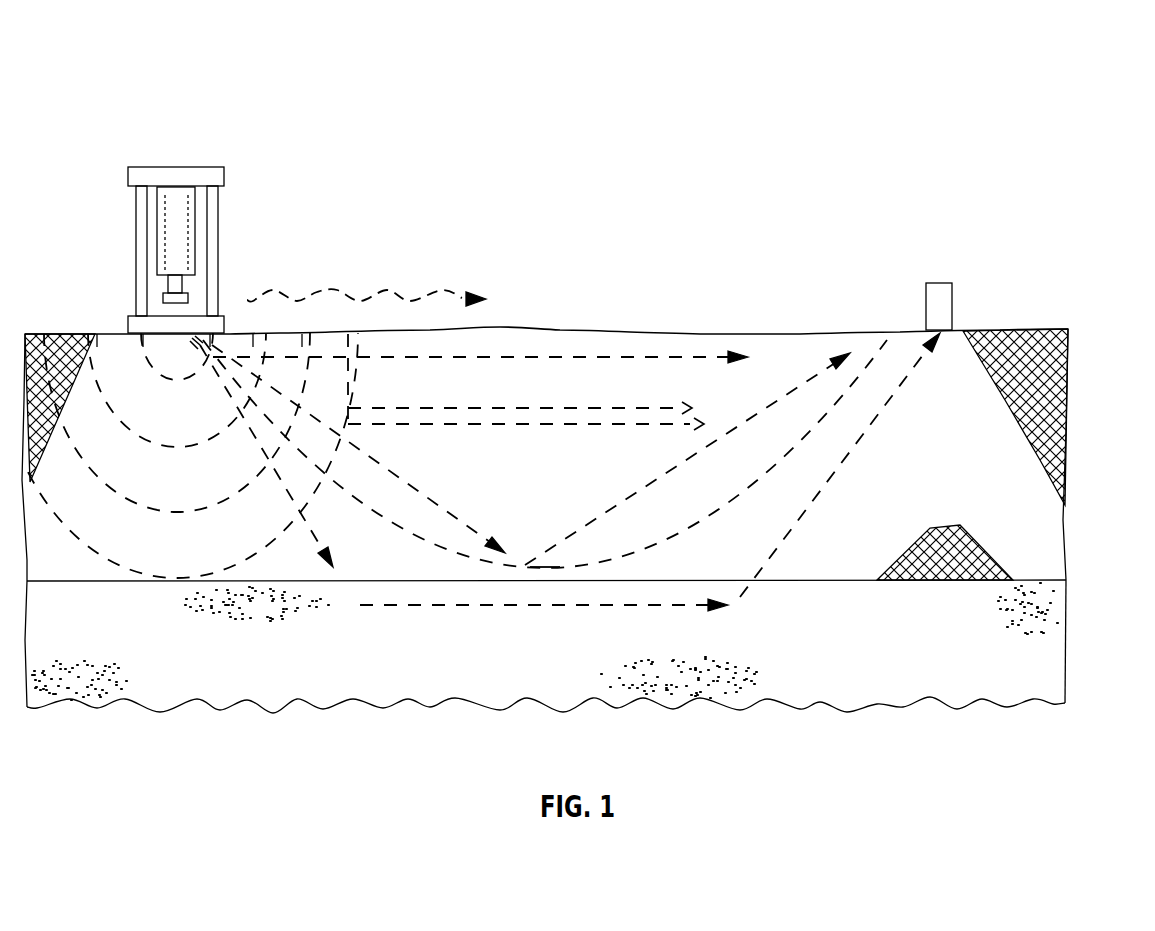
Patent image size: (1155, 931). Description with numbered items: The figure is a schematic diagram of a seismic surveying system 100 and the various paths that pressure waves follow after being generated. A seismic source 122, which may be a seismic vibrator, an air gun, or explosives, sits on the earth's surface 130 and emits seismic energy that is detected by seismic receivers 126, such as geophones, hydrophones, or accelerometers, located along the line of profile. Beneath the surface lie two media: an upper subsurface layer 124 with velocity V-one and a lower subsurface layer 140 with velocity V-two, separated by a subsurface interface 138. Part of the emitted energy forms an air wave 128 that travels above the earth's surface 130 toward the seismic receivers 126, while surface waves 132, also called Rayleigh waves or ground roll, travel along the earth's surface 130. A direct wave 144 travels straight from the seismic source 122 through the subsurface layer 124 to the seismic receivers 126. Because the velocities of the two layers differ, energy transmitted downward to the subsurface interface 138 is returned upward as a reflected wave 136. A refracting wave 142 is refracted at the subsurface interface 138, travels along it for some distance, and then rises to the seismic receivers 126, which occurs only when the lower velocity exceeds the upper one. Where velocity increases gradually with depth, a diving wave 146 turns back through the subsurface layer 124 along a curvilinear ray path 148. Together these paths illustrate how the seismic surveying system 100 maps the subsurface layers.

The seismic surveying system 100 is at (910, 145).
The seismic source 122 is at (177, 167).
The subsurface layer 124 is at (1078, 447).
The seismic receivers 126 is at (940, 283).
The air wave 128 is at (357, 300).
The earth's surface 130 is at (1014, 329).
The surface waves 132 is at (585, 357).
The reflected wave 136 is at (615, 505).
The subsurface interface 138 is at (805, 585).
The subsurface layer 140 is at (1081, 644).
The refracting wave 142 is at (512, 606).
The direct wave 144 is at (503, 427).
The diving wave 146 is at (773, 481).
The curvilinear ray path 148 is at (548, 566).